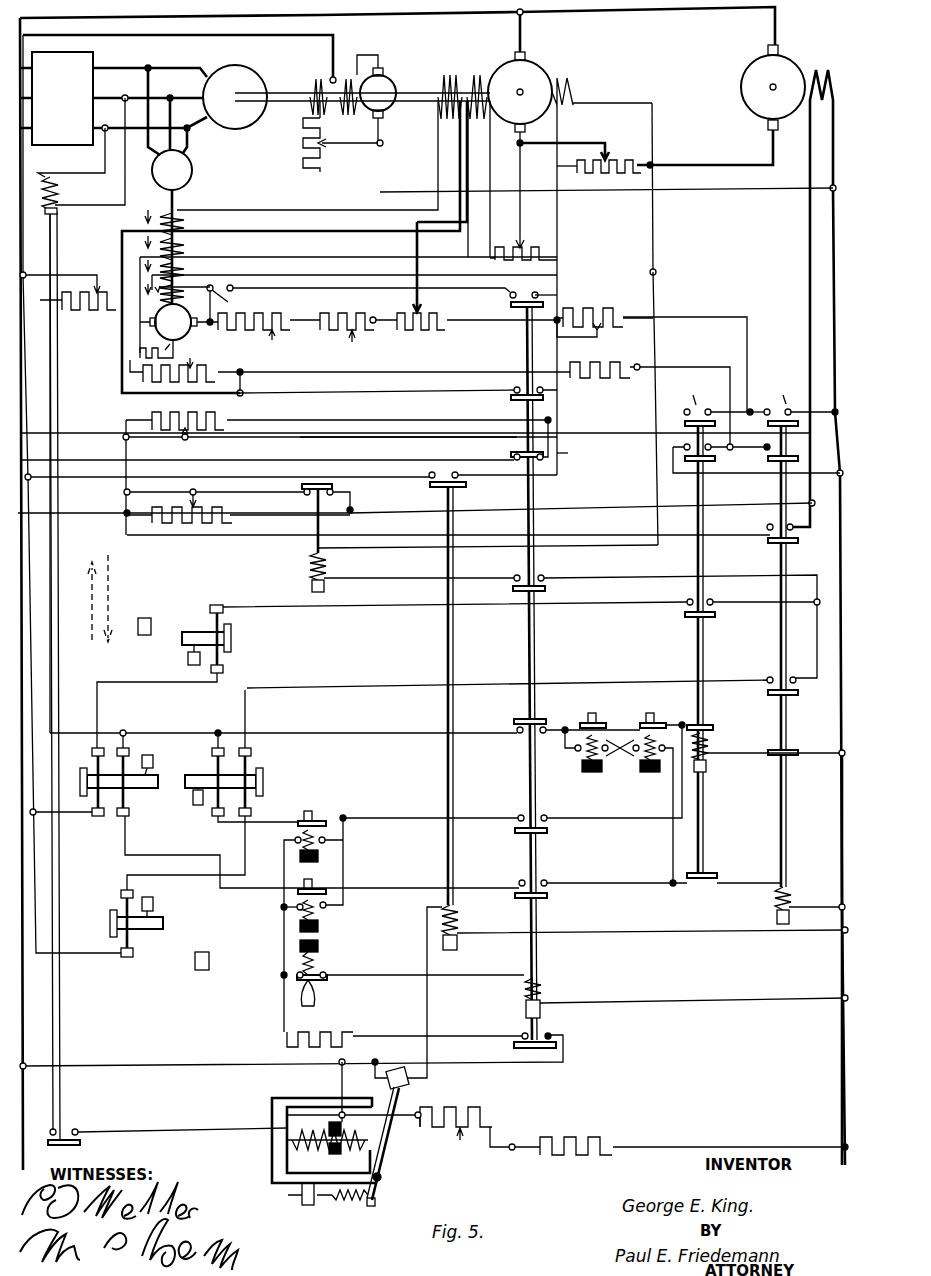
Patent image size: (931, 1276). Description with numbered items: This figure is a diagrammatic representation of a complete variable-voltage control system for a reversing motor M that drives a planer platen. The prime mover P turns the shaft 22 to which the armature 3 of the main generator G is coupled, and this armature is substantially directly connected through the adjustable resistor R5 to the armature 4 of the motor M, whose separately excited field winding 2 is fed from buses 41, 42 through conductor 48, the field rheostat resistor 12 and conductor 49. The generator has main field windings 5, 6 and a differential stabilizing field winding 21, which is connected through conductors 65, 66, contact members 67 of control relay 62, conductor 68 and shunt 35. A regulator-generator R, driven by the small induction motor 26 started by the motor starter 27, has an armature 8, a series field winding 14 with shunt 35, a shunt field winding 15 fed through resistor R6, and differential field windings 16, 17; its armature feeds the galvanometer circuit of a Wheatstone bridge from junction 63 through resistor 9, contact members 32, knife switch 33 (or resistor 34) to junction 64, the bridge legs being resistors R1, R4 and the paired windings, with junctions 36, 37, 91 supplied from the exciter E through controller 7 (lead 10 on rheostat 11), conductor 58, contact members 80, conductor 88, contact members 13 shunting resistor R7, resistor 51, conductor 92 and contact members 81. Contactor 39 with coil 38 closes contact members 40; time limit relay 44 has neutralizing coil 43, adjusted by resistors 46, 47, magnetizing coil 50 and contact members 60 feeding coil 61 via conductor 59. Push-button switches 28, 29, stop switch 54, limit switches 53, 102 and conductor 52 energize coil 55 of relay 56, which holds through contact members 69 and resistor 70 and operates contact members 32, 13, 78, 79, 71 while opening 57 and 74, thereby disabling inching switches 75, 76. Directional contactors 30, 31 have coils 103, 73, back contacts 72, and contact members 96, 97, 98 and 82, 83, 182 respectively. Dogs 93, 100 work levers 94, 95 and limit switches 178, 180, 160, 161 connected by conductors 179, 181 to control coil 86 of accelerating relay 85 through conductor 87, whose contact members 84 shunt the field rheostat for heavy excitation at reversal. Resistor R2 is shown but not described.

The field winding 2 is at (820, 70).
The armature 3 is at (508, 66).
The armature 4 is at (745, 98).
The field winding 5 is at (446, 76).
The field winding 6 is at (475, 76).
The controller 7 is at (103, 437).
The armature 8 is at (188, 334).
The permanent resistor 9 is at (355, 340).
The adjustable lead 10 is at (190, 437).
The rheostat 11 is at (338, 427).
The resistor 12 is at (238, 506).
The contact members 13 is at (514, 390).
The series field winding 14 is at (186, 271).
The main field winding 15 is at (178, 298).
The differential field winding 16 is at (186, 224).
The differential field winding 17 is at (186, 249).
The differential stabilizing field winding 21 is at (576, 78).
The shaft 22 is at (285, 98).
The induction motor 26 is at (193, 168).
The motor starter 27 is at (95, 84).
The push-button switch 28 is at (320, 818).
The push-button switch 29 is at (328, 886).
The directional contactor 30 is at (713, 648).
The directional contactor 31 is at (795, 654).
The contact members 32 is at (540, 294).
The knife switch 33 is at (240, 300).
The adjustable resistor 34 is at (275, 340).
The adjustable shunt 35 is at (608, 156).
The junction 36 is at (242, 372).
The junction 37 is at (500, 322).
The coil 38 is at (58, 190).
The contactor 39 is at (75, 390).
The contact members 40 is at (74, 1132).
The bus 41 is at (22, 1038).
The bus 42 is at (845, 1045).
The neutralizing coil 43 is at (366, 1156).
The time limit relay 44 is at (304, 1122).
The resistor 46 is at (594, 1137).
The resistor 47 is at (478, 1108).
The conductor 48 is at (86, 512).
The conductor 49 is at (394, 509).
The magnetizing coil 50 is at (300, 1144).
The resistor 51 is at (602, 306).
The conductor 52 is at (172, 732).
The reversing limit switch 53 is at (126, 786).
The stop switch 54 is at (318, 970).
The actuating coil 55 is at (548, 984).
The regulator-generator control relay 56 is at (527, 675).
The contact members 57 is at (512, 455).
The conductor 58 is at (392, 442).
The conductor 59 is at (150, 1066).
The contact members 60 is at (403, 1068).
The actuating coil 61 is at (458, 918).
The control relay 62 is at (440, 693).
The junction 63 is at (430, 310).
The junction 64 is at (138, 325).
The conductor 65 is at (375, 16).
The conductor 66 is at (252, 476).
The contact members 67 is at (458, 472).
The conductor 68 is at (568, 453).
The contact members 69 is at (550, 1034).
The resistor 70 is at (348, 1032).
The contact members 71 is at (544, 882).
The back contact members 72 is at (704, 880).
The actuating coil 73 is at (788, 886).
The contact members 74 is at (520, 732).
The inching push button switch 75 is at (598, 724).
The inching push button switch 76 is at (652, 722).
The contact members 78 is at (542, 576).
The contact members 79 is at (542, 818).
The contact members 80 is at (782, 438).
The contact members 81 is at (805, 394).
The contact members 82 is at (770, 525).
The contact members 83 is at (791, 760).
The contact members 84 is at (330, 490).
The accelerating control relay 85 is at (304, 521).
The coil 86 is at (328, 564).
The conductor 87 is at (630, 546).
The conductor 88 is at (700, 367).
The junction 91 is at (750, 410).
The conductor 92 is at (735, 316).
The dog 93 is at (152, 618).
The lever 94 is at (153, 760).
The lever 95 is at (153, 902).
The contact members 96 is at (713, 394).
The contact members 97 is at (710, 458).
The contact members 98 is at (710, 600).
The dog 100 is at (210, 960).
The limit switch 102 is at (218, 748).
The actuating coil 103 is at (708, 736).
The limit switch 160 is at (90, 752).
The limit switch 161 is at (226, 665).
The limit switch 178 is at (120, 908).
The conductor 179 is at (246, 862).
The limit switch 180 is at (252, 756).
The conductor 181 is at (383, 686).
The contact members 182 is at (775, 677).
The prime mover P is at (235, 83).
The exciter E is at (361, 101).
The motor M is at (764, 84).
The regulator-generator R is at (132, 344).
The resistor R1 is at (350, 361).
The resistor R2 is at (156, 345).
The resistor R4 is at (478, 336).
The adjustable resistor R5 is at (523, 196).
The adjustable resistor R6 is at (88, 316).
The resistor R7 is at (602, 362).